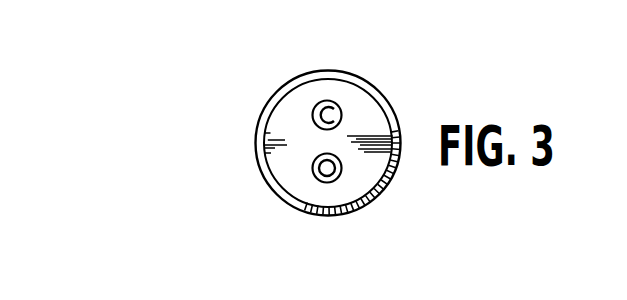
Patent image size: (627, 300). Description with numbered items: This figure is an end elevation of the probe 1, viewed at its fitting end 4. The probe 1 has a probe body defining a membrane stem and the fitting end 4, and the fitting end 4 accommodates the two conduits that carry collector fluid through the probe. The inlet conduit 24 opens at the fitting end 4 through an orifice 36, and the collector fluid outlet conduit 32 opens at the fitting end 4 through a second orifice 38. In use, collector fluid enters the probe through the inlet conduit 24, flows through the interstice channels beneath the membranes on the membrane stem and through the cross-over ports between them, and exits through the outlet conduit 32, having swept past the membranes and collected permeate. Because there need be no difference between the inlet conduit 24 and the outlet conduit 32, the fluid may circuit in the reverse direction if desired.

The probe 1 is at (260, 107).
The fitting end 4 is at (265, 123).
The inlet conduit 24 is at (334, 115).
The collector fluid outlet conduit 32 is at (327, 168).
The orifice 36 is at (313, 113).
The orifice 38 is at (313, 168).